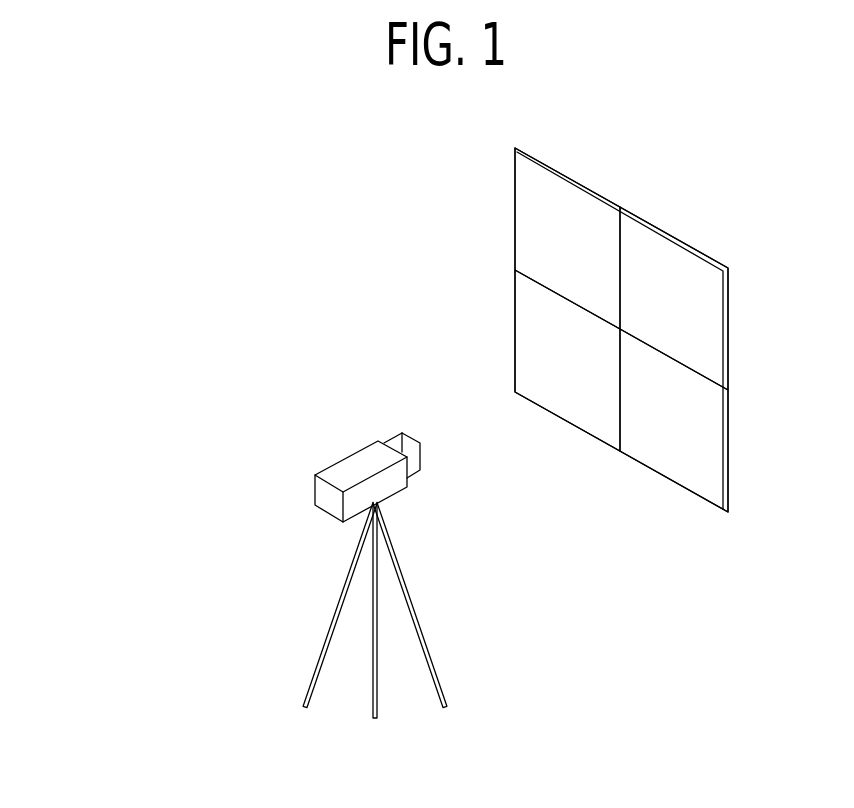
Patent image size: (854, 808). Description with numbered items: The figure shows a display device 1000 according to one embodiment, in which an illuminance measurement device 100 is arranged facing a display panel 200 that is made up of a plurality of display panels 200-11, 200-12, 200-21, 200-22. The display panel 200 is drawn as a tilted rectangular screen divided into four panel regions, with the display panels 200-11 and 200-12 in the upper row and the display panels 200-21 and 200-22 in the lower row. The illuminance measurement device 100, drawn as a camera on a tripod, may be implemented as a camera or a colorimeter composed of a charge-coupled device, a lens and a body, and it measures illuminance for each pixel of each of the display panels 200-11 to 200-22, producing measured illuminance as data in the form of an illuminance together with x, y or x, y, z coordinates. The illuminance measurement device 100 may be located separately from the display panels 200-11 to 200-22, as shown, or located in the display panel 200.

The display device 1000 is at (120, 192).
The illuminance measurement device 100 is at (348, 457).
The display panel 200 is at (673, 238).
The display panel 200-11 is at (567, 238).
The display panel 200-12 is at (674, 298).
The display panel 200-21 is at (567, 360).
The display panel 200-22 is at (674, 420).